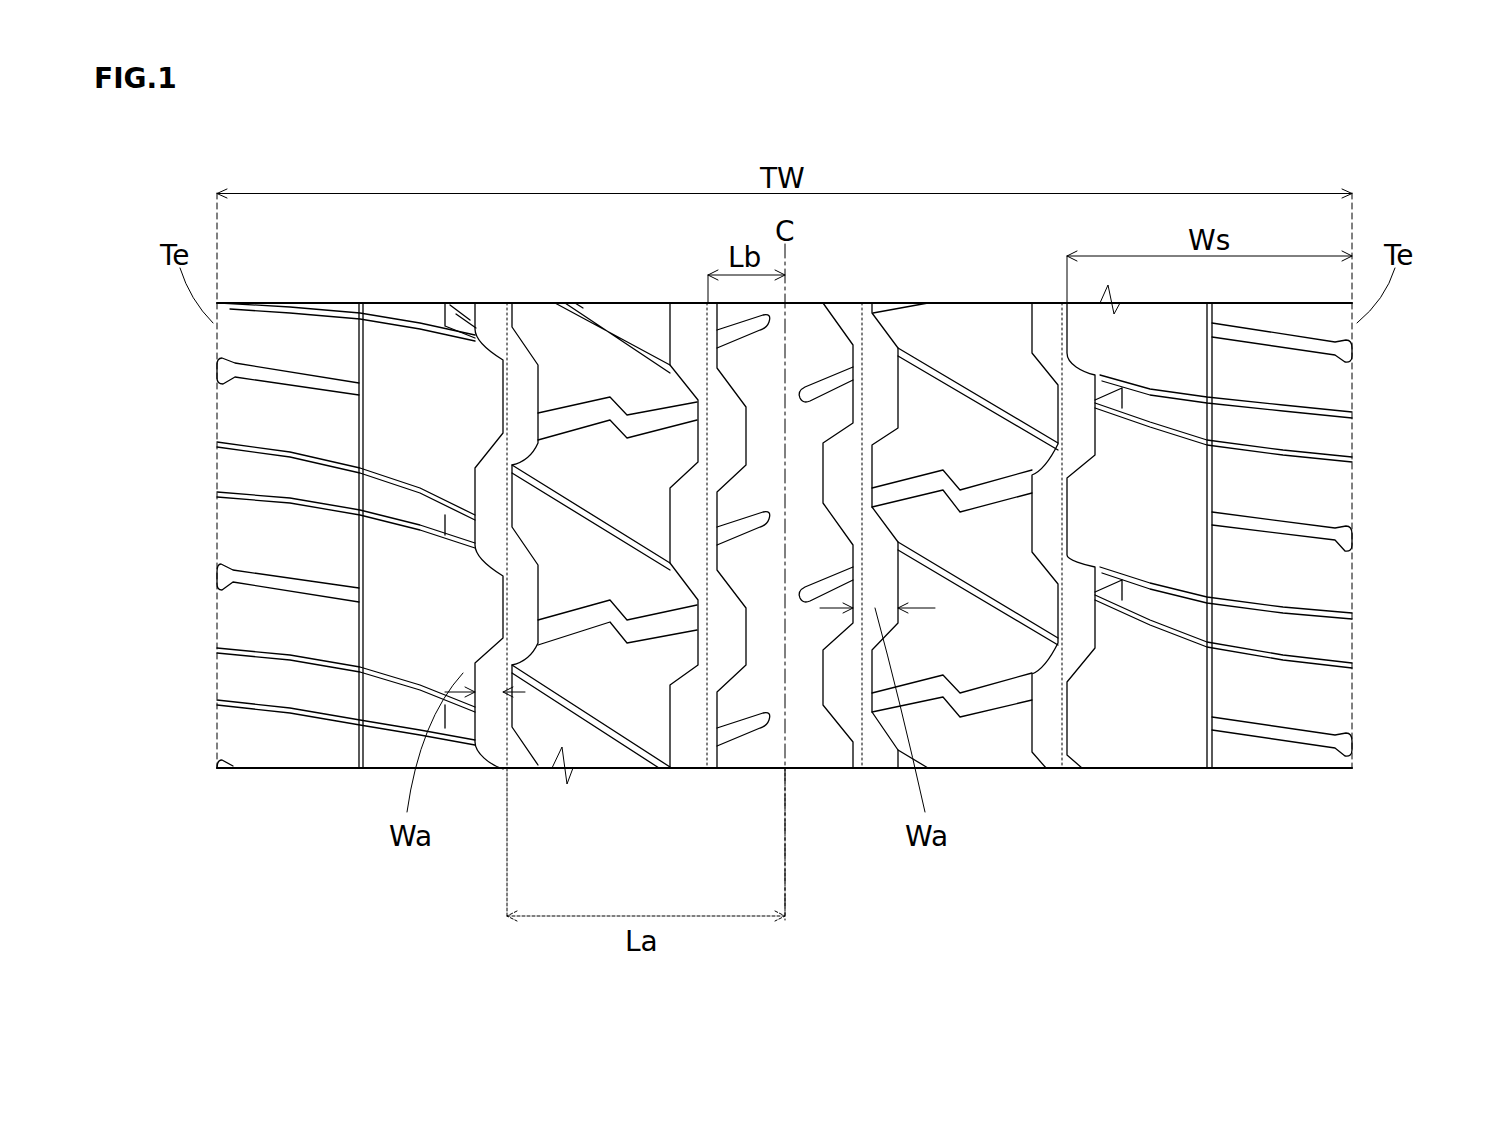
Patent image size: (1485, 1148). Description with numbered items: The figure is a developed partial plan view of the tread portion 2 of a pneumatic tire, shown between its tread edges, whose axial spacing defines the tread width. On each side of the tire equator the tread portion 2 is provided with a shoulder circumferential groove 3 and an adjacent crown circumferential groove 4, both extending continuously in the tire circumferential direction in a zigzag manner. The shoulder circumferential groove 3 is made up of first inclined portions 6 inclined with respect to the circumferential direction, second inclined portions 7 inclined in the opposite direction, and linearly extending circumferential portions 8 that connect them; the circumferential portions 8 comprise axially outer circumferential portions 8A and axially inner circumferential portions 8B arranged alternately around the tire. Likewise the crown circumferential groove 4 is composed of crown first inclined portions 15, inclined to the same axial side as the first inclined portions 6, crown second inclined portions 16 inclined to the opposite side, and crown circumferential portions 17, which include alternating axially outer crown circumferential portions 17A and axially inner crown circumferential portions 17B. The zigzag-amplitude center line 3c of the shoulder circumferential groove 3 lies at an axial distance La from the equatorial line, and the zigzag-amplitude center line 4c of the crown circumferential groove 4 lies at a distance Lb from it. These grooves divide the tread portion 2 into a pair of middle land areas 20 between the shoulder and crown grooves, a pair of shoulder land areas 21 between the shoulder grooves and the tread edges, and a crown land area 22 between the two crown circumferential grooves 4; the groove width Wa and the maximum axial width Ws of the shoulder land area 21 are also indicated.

The tread portion 2 is at (1321, 157).
The shoulder circumferential groove 3 is at (497, 297).
The zigzag-amplitude center line of the shoulder circumferential groove 3c is at (460, 298).
The crown circumferential groove 4 is at (695, 297).
The zigzag-amplitude center line of the crown circumferential groove 4c is at (648, 298).
The first inclined portion 6 is at (1070, 657).
The second inclined portion 7 is at (1067, 560).
The circumferential portion 8 is at (1078, 610).
The axially outer circumferential portion 8A is at (490, 510).
The axially inner circumferential portion 8B is at (520, 600).
The crown first inclined portion 15 is at (717, 677).
The crown second inclined portion 16 is at (697, 580).
The crown circumferential portion 17 is at (727, 636).
The axially outer crown circumferential portion 17A is at (885, 562).
The axially inner crown circumferential portion 17B is at (847, 470).
The middle land area 20 is at (535, 309).
The shoulder land area 21 is at (323, 755).
The crown land area 22 is at (822, 746).